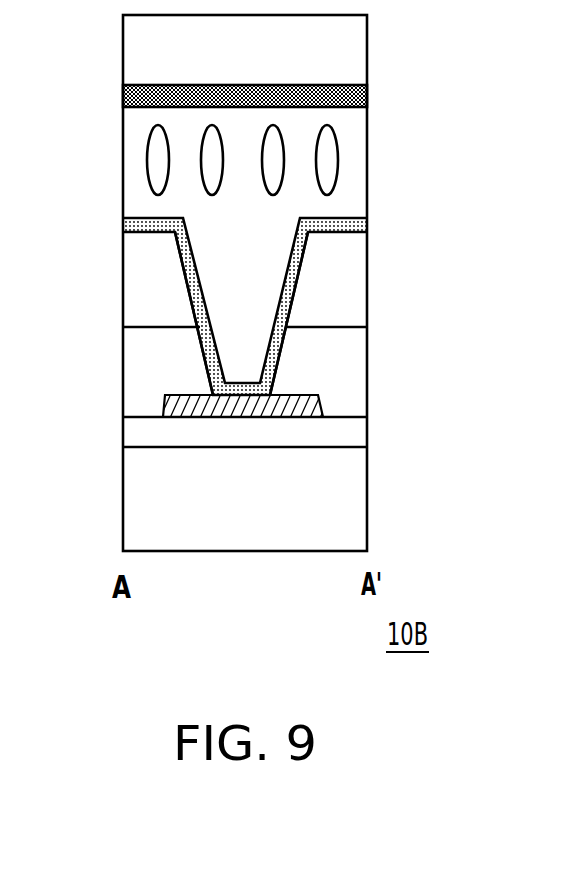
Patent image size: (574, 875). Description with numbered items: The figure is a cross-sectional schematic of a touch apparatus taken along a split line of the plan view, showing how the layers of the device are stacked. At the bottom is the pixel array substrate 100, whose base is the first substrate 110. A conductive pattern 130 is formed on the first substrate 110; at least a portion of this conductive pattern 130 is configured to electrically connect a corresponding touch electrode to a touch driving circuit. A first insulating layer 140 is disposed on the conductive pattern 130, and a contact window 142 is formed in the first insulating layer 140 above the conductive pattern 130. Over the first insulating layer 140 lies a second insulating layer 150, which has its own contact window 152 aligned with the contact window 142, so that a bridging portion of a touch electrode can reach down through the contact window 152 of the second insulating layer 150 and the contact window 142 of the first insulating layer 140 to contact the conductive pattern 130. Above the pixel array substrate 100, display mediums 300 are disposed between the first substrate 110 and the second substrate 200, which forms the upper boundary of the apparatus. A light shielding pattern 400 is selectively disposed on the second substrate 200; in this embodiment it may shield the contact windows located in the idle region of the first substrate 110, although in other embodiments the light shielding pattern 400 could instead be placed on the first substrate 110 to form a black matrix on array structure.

The pixel array substrate 100 is at (380, 217).
The first substrate 110 is at (131, 496).
The conductive pattern 130 is at (182, 408).
The first insulating layer 140 is at (136, 360).
The contact window of the first insulating layer 142 is at (210, 355).
The second insulating layer 150 is at (136, 280).
The contact window of the second insulating layer 152 is at (190, 274).
The second substrate 200 is at (356, 49).
The display mediums 300 is at (328, 161).
The light shielding pattern 400 is at (357, 97).